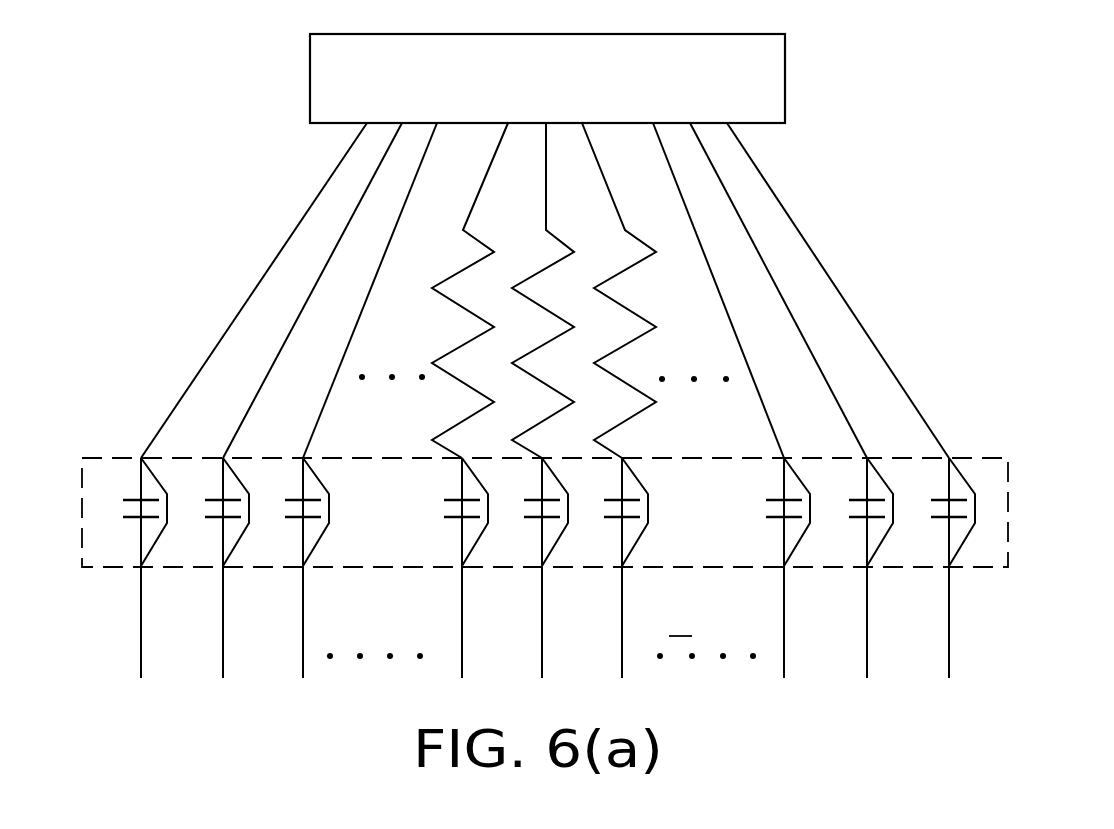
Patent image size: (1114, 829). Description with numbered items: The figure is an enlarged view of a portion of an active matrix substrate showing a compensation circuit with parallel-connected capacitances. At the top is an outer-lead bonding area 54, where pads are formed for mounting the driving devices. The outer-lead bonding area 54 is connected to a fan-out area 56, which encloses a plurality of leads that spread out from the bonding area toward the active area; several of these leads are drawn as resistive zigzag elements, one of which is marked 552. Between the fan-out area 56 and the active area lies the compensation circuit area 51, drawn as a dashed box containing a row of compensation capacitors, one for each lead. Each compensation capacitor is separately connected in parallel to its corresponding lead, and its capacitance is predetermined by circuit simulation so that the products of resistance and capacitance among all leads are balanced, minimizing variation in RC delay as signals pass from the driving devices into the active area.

The outer-lead bonding area 54 is at (766, 82).
The fan-out area 56 is at (593, 290).
The resistor 552 is at (546, 309).
The compensation circuit area 51 is at (1008, 508).